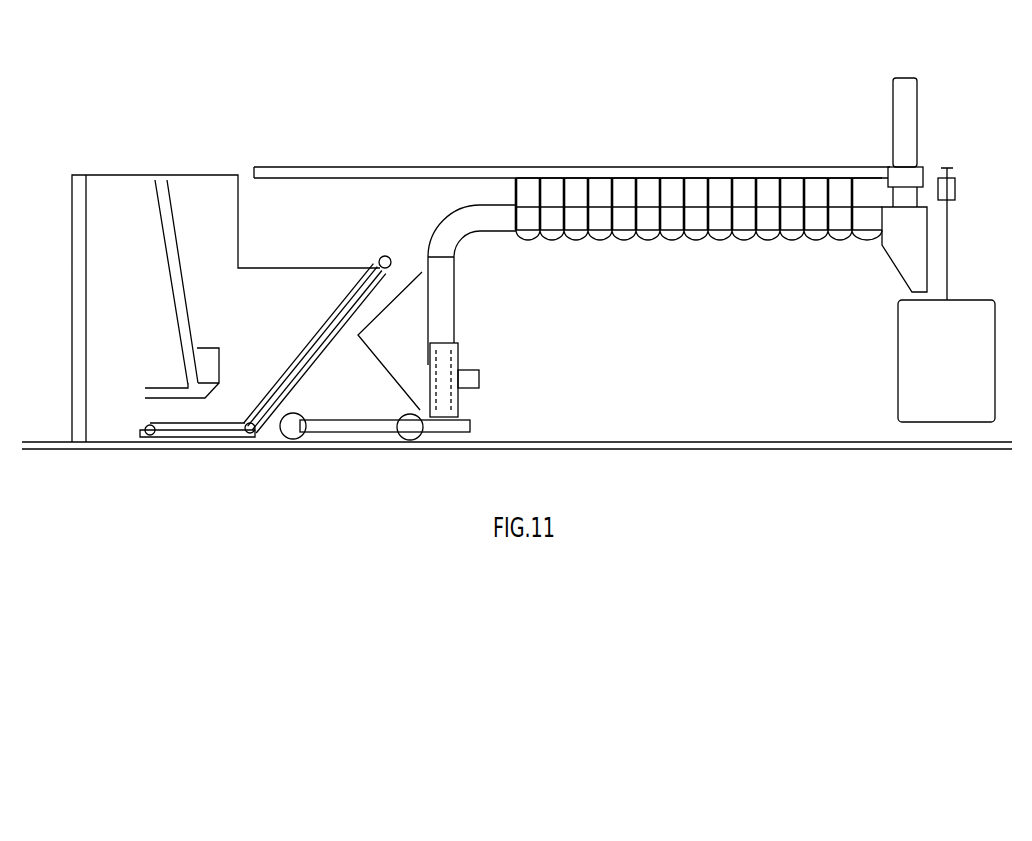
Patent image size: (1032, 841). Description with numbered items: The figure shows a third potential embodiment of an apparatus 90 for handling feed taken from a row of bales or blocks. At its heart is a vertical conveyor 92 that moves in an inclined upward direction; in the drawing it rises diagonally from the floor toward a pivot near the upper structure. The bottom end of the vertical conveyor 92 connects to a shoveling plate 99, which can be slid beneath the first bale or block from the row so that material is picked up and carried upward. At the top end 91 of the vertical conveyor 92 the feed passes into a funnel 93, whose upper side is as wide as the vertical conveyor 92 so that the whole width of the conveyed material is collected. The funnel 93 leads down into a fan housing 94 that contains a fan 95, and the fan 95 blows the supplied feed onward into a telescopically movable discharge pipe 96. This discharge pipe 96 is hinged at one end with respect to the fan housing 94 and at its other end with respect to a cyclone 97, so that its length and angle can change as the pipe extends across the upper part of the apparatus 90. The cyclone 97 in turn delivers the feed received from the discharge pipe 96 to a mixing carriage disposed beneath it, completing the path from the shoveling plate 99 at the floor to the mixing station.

The apparatus 90 is at (765, 97).
The top end 91 is at (383, 256).
The vertical conveyor 92 is at (333, 320).
The funnel 93 is at (412, 303).
The fan housing 94 is at (460, 392).
The fan 95 is at (458, 348).
The telescopically movable discharge pipe 96 is at (721, 217).
The cyclone 97 is at (908, 245).
The shoveling plate 99 is at (143, 365).